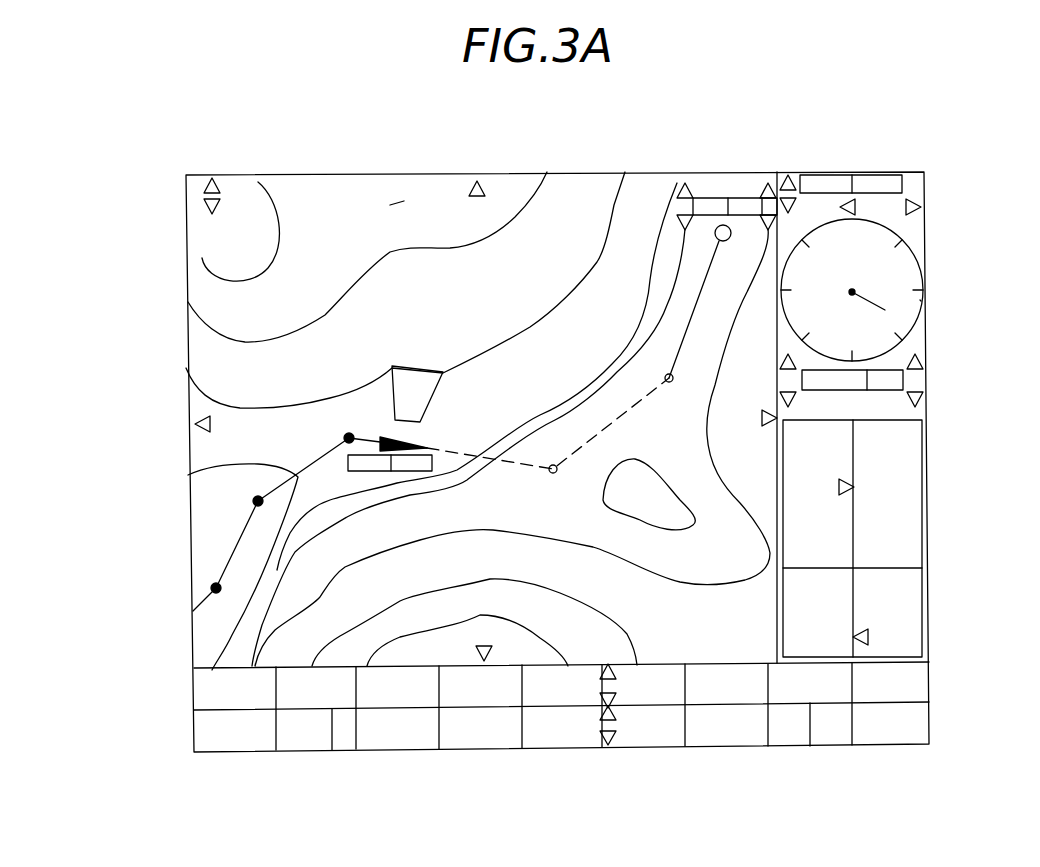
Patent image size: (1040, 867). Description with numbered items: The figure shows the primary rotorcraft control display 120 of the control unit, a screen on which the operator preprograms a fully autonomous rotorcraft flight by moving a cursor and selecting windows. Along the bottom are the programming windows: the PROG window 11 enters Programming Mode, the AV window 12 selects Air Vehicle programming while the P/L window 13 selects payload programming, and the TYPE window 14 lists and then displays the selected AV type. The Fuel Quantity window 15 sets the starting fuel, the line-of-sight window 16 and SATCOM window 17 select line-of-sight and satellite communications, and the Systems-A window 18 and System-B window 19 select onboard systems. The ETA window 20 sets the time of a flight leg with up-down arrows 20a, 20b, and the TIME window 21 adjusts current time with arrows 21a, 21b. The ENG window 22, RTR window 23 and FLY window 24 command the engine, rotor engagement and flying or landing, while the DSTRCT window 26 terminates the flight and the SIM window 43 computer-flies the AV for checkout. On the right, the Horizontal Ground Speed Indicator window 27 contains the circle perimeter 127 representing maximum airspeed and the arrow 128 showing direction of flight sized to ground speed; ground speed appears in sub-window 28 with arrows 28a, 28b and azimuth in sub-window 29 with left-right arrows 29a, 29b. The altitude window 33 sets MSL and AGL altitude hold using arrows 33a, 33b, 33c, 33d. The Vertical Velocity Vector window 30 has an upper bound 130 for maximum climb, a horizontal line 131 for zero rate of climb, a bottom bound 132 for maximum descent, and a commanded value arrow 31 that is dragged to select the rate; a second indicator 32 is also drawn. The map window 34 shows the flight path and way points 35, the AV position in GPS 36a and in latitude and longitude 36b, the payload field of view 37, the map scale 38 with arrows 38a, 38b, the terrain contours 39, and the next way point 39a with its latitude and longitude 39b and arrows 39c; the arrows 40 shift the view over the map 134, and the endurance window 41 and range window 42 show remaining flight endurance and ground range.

The primary rotorcraft control display 120 is at (165, 541).
The AV window 12 is at (203, 688).
The P/L window 13 is at (235, 742).
The TYPE window 14 is at (333, 705).
The Fuel Quantity window 15 is at (297, 744).
The LOS 1 window 16 is at (509, 700).
The SATCOM window 17 is at (467, 748).
The Systems-A window 18 is at (592, 698).
The System-B window 19 is at (555, 746).
The ETA window 20 is at (636, 702).
The up arrow 20a is at (617, 665).
The down arrow 20b is at (614, 694).
The TIME window 21 is at (628, 713).
The up arrow 21a is at (612, 714).
The down arrow 21b is at (609, 746).
The ENG window 22 is at (823, 746).
The RTR window 23 is at (793, 746).
The FLY window 24 is at (835, 697).
The DSTRCT window 26 is at (930, 681).
The Horizontal Ground Speed Indicator window 27 is at (905, 275).
The ground speed sub-window 28 is at (838, 175).
The up arrow 28a is at (790, 175).
The down arrow 28b is at (803, 178).
The velocity vector azimuth sub-window 29 is at (903, 184).
The left arrow 29a is at (865, 176).
The right arrow 29b is at (921, 207).
The Vertical Velocity Vector window 30 is at (912, 453).
The commanded value arrow 31 is at (866, 637).
The climb rate indicator 32 is at (854, 487).
The altitude window 33 is at (918, 348).
The up arrow 33a is at (924, 363).
The down arrow 33b is at (924, 399).
The up arrow 33c is at (784, 362).
The down arrow 33d is at (788, 396).
The map section window 34 is at (353, 207).
The flight path and way points 35 is at (215, 467).
The AV current position in GPS 36a is at (385, 443).
The AV current position in Latitude and Longitude 36b is at (390, 472).
The estimated payload field of view 37 is at (420, 412).
The current map scale 38 is at (240, 202).
The scale up arrow 38a is at (211, 184).
The scale down arrow 38b is at (207, 217).
The terrain contour 39 is at (631, 329).
The way point 39a is at (719, 238).
The way point Latitude and Longitude 39b is at (712, 197).
The up/down arrows 39c is at (680, 187).
The arrow 40 is at (473, 198).
The remaining flight endurance window 41 is at (425, 700).
The ground range window 42 is at (388, 745).
The SIM window 43 is at (720, 748).
The PROG window 11 is at (760, 697).
The circle perimeter 127 is at (922, 312).
The arrow 128 is at (864, 301).
The upper bound 130 is at (925, 421).
The horizontal line 131 is at (912, 568).
The bottom bound 132 is at (920, 656).
The map 134 is at (397, 203).